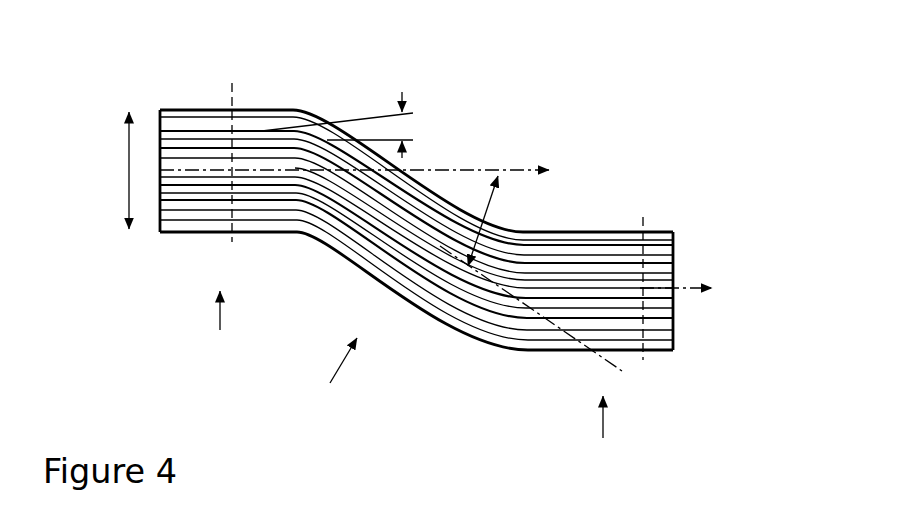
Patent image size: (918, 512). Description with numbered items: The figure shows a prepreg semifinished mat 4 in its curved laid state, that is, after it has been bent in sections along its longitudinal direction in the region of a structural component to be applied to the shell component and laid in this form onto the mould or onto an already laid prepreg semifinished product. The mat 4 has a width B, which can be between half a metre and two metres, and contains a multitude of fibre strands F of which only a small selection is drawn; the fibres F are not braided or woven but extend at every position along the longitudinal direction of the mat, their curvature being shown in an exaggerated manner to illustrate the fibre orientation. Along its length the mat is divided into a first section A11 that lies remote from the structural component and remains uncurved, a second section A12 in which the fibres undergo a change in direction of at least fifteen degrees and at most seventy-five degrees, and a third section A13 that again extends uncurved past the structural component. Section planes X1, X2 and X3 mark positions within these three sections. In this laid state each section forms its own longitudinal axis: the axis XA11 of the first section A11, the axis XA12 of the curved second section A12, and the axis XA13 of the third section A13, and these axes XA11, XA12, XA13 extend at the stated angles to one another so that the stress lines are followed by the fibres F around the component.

The prepreg semifinished mat 4 is at (453, 242).
The fibres F is at (183, 130).
The section plane in first section X1 is at (237, 97).
The section plane in second section X2 is at (358, 271).
The section plane in third section X3 is at (643, 217).
The width B is at (116, 170).
The longitudinal axis of first section XA11 is at (518, 168).
The longitudinal axis of second section XA12 is at (630, 368).
The longitudinal axis of third section XA13 is at (682, 287).
The first section A11 is at (217, 341).
The second section A12 is at (327, 379).
The third section A13 is at (599, 438).